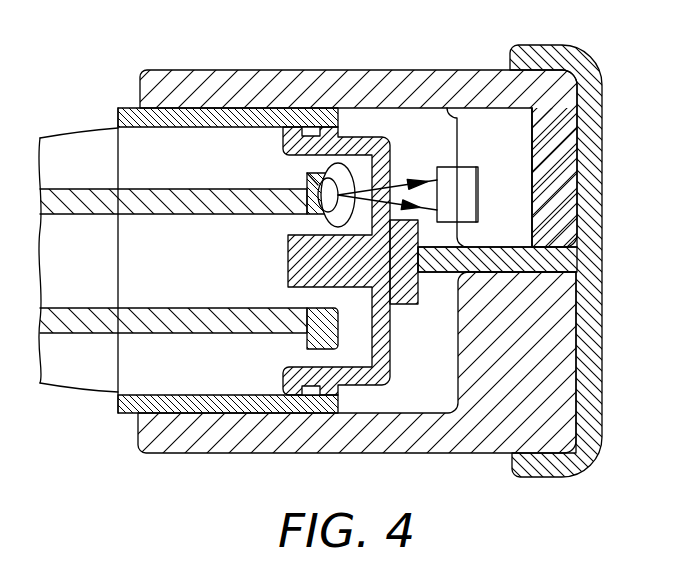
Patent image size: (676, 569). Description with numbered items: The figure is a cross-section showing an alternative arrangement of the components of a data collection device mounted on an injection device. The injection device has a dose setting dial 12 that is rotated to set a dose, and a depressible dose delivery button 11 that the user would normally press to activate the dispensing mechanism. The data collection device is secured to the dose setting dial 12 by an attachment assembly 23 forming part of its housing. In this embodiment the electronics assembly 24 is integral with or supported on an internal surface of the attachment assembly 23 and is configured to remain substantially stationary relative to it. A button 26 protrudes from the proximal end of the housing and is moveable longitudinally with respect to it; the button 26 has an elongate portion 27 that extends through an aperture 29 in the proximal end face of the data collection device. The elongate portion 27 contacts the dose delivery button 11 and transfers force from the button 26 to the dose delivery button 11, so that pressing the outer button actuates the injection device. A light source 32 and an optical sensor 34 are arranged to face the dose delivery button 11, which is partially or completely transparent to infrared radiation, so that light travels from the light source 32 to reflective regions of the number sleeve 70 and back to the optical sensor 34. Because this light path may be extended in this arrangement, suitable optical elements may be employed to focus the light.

The dose delivery button 11 is at (390, 350).
The dose setting dial 12 is at (188, 395).
The attachment assembly 23 is at (217, 453).
The electronics assembly 24 is at (498, 120).
The button 26 is at (593, 258).
The elongate portion 27 is at (438, 272).
The aperture 29 is at (573, 246).
The light source 32 is at (408, 167).
The optical sensor 34 is at (447, 166).
The number sleeve 70 is at (312, 165).